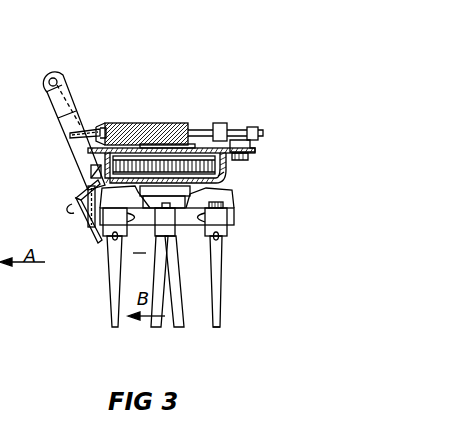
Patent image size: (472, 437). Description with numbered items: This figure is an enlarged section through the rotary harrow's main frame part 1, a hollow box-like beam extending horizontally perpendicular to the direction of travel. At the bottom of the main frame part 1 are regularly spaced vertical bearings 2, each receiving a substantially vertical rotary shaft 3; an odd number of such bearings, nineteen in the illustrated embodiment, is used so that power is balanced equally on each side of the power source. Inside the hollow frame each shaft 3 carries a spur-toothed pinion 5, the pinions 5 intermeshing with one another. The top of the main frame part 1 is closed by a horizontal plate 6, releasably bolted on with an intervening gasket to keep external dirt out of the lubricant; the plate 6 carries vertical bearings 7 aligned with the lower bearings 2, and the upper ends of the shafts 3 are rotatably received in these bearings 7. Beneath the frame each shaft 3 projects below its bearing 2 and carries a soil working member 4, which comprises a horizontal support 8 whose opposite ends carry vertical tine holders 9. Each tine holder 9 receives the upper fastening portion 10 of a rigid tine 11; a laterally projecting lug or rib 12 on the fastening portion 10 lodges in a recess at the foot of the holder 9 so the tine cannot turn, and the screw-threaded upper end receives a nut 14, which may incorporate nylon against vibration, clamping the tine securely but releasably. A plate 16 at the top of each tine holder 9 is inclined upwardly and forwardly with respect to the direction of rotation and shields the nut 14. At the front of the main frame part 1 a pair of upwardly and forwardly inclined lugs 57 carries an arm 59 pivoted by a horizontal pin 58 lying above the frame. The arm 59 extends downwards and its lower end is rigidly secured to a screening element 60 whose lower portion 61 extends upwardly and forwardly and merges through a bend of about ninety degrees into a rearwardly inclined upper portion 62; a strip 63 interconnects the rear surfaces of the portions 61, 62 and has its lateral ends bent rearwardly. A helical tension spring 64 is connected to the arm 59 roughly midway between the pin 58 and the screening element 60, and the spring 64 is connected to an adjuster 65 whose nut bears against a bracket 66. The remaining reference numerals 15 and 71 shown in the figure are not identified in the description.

The main frame part 1 is at (242, 173).
The vertical bearings 2 is at (230, 168).
The rotary shaft 3 is at (182, 158).
The soil working member 4 is at (167, 220).
The spur-toothed pinion 5 is at (228, 164).
The plate 6 is at (244, 154).
The vertical bearings 7 is at (196, 129).
The support 8 is at (176, 226).
The tine holders 9 is at (226, 231).
The fastening portion 10 is at (227, 251).
The tine 11 is at (221, 316).
The lug or rib 12 is at (114, 247).
The nut 14 is at (224, 206).
The leg 15 is at (115, 296).
The plate 16 is at (230, 198).
The lugs 57 is at (80, 104).
The pin 58 is at (56, 76).
The arm 59 is at (55, 114).
The screening element 60 is at (72, 208).
The lower portion 61 is at (86, 226).
The upper portion 62 is at (90, 183).
The strip 63 is at (93, 237).
The helical tension springs 64 is at (160, 123).
The adjusters 65 is at (222, 124).
The brackets 66 is at (240, 142).
The hinge block 71 is at (92, 169).